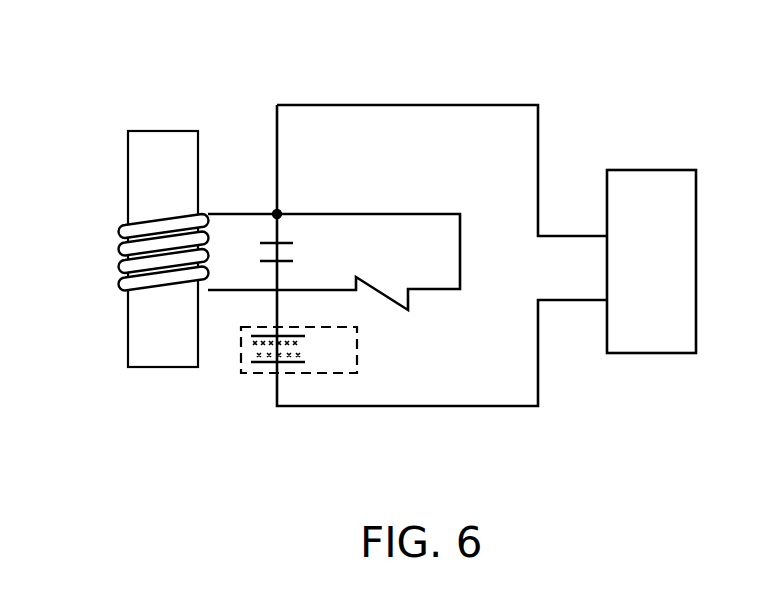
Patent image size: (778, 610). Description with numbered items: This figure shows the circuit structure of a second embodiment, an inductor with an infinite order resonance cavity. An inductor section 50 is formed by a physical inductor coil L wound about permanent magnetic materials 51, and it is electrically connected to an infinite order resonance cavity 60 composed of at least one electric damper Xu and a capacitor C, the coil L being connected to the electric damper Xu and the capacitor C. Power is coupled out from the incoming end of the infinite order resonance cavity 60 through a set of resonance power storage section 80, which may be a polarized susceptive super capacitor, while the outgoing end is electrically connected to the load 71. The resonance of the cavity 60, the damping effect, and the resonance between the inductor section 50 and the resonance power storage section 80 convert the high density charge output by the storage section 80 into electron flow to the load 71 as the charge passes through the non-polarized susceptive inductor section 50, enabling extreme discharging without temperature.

The inductor section 50 is at (108, 227).
The permanent magnetic materials 51 is at (141, 146).
The infinite order resonance cavity 60 is at (304, 130).
The load 71 is at (638, 200).
The resonance power storage section 80 is at (262, 373).
The physical inductor coil L is at (120, 263).
The capacitor C is at (290, 255).
The electric damper Xu is at (400, 328).